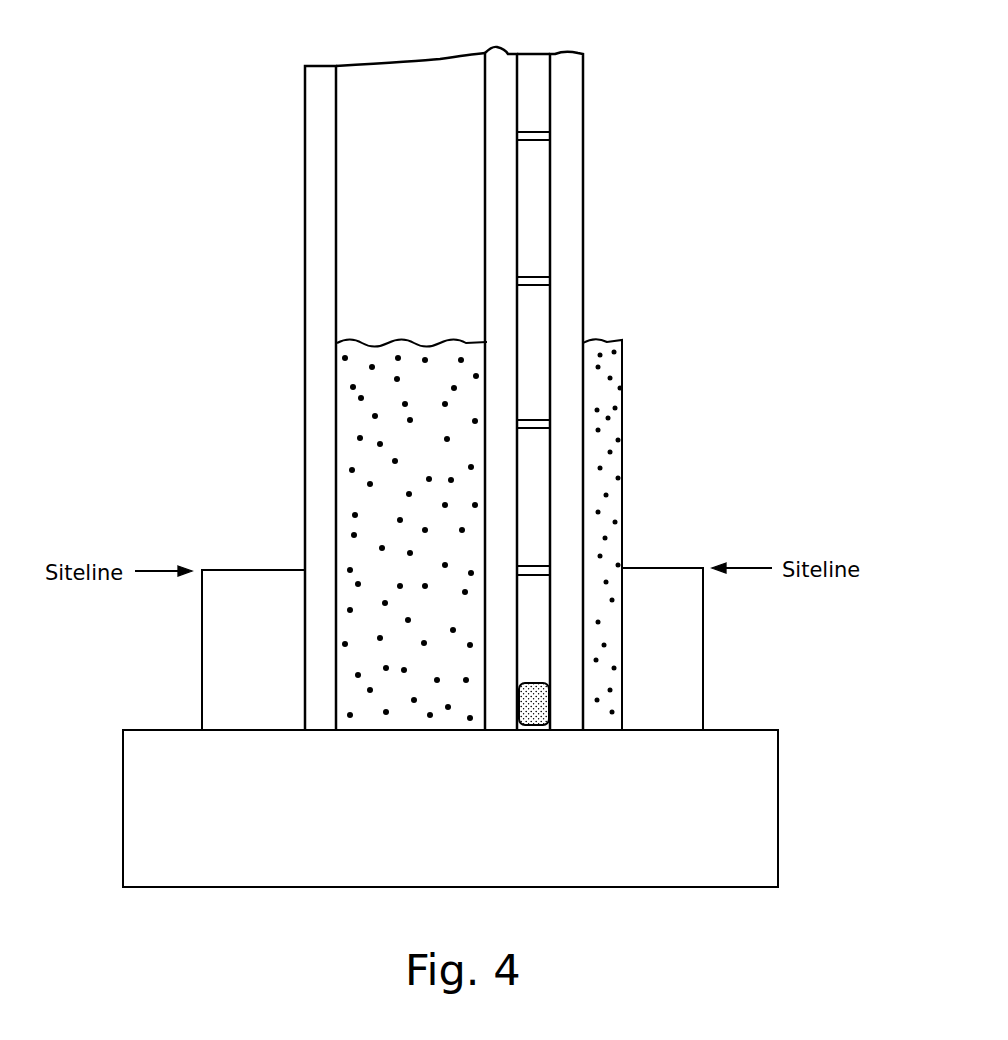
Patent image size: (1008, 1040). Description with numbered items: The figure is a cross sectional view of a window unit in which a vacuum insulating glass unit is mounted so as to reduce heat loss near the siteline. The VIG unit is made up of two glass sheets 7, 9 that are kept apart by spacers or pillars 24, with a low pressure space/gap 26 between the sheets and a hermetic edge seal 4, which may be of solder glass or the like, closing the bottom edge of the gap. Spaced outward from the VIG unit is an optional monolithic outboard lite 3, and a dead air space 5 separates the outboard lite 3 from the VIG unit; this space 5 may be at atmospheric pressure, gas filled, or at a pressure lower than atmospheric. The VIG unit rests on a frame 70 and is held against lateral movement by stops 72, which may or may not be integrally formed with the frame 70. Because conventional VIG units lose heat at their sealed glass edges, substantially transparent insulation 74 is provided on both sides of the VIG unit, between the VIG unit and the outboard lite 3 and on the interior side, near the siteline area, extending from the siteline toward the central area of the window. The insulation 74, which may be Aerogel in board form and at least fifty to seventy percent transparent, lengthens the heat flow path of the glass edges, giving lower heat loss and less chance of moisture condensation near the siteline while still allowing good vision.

The monolithic lite 3 is at (318, 238).
The dead air space 5 is at (395, 160).
The glass sheet 7 is at (562, 187).
The glass sheet 9 is at (495, 175).
The spacers or pillars 24 is at (532, 136).
The low pressure space/gap 26 is at (535, 497).
The frame 70 is at (552, 860).
The stops 72 is at (205, 640).
The transparent insulation 74 is at (370, 382).
The hermetic edge seal 4 is at (535, 718).